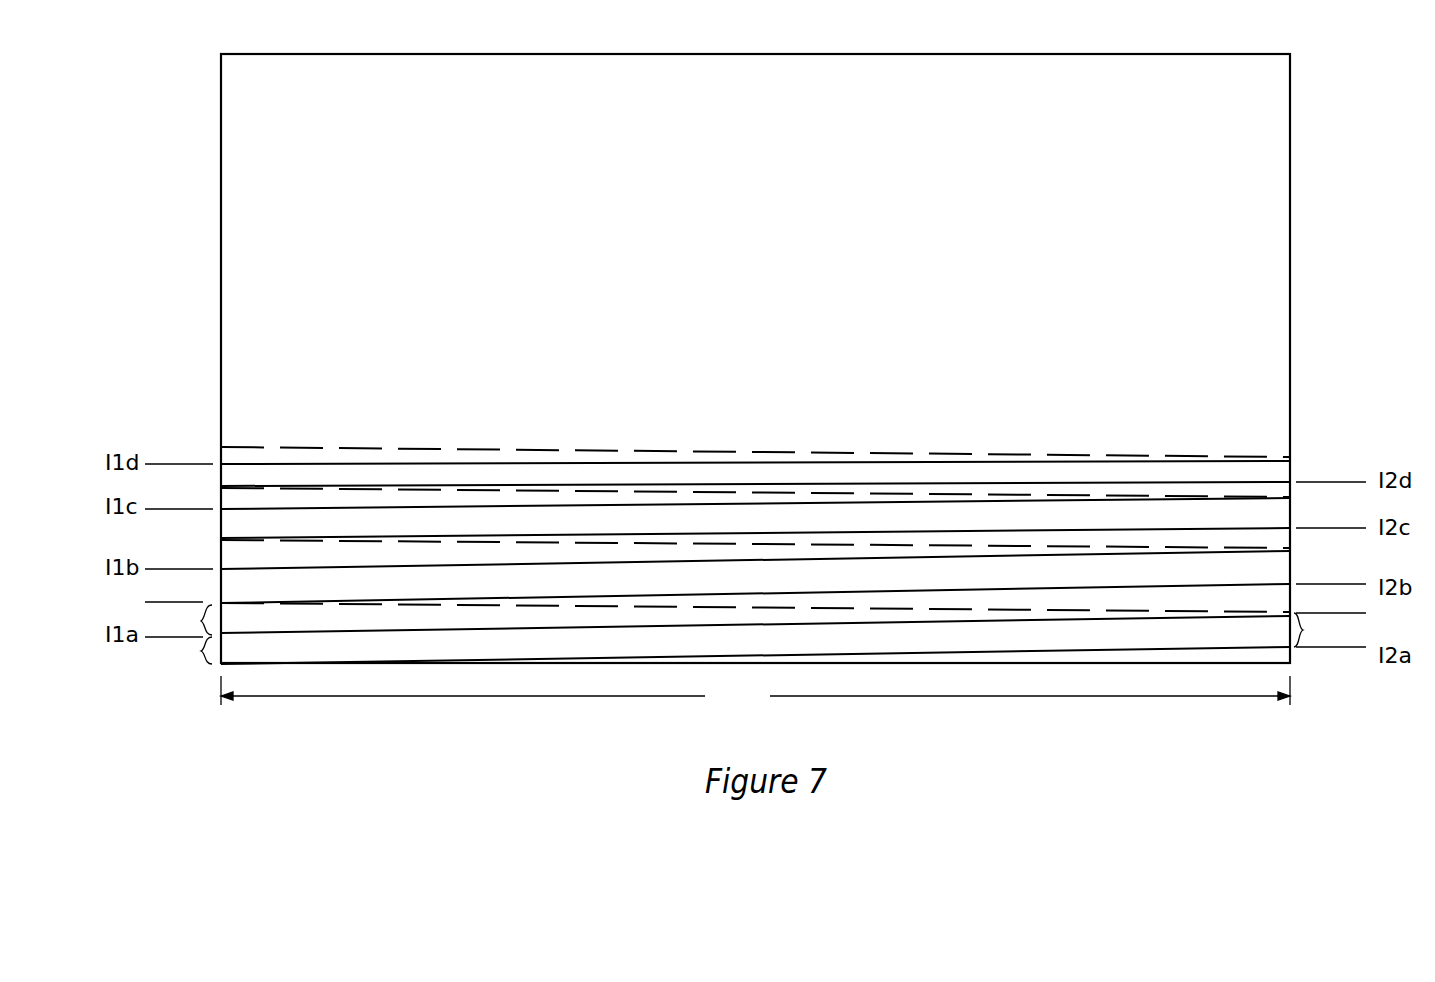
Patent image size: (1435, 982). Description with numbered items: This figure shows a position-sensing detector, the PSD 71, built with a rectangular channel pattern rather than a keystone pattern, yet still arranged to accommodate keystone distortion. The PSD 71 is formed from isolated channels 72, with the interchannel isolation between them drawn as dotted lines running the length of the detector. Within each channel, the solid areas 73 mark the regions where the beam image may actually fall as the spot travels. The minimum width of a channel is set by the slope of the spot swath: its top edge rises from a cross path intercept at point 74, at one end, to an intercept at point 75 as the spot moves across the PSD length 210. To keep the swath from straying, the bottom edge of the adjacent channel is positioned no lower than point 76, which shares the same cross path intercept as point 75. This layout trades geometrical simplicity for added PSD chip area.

The PSD 71 is at (578, 70).
The isolated channels 72 is at (202, 628).
The solid areas 73 is at (1303, 630).
The point 74 is at (201, 650).
The point 75 is at (1297, 614).
The point 76 is at (220, 603).
The PSD length 210 is at (755, 692).